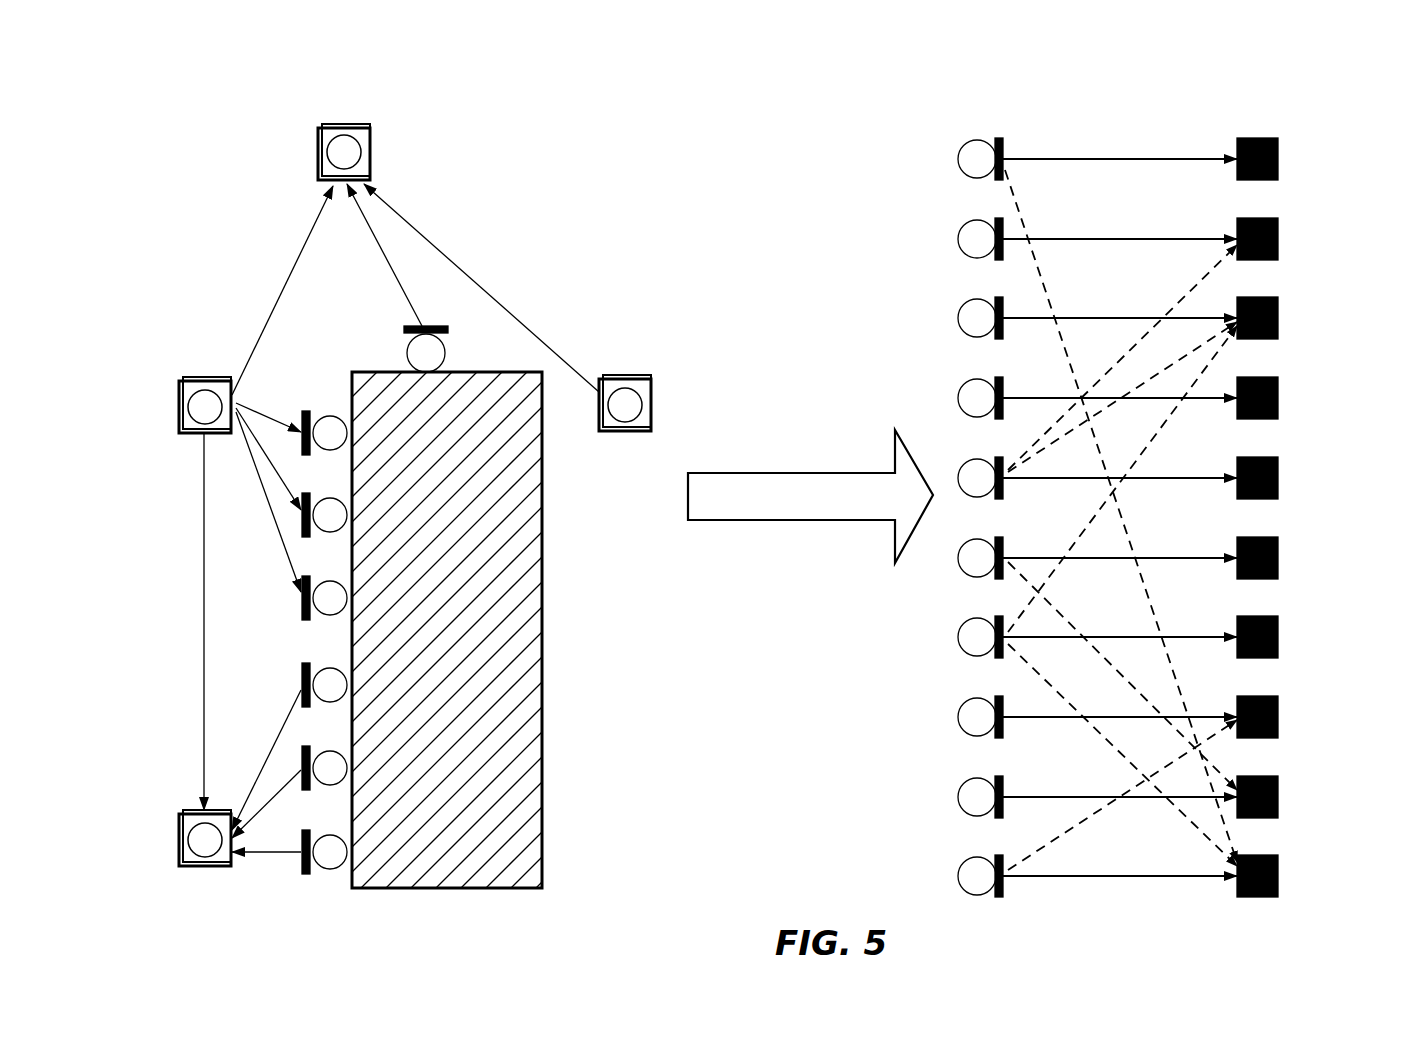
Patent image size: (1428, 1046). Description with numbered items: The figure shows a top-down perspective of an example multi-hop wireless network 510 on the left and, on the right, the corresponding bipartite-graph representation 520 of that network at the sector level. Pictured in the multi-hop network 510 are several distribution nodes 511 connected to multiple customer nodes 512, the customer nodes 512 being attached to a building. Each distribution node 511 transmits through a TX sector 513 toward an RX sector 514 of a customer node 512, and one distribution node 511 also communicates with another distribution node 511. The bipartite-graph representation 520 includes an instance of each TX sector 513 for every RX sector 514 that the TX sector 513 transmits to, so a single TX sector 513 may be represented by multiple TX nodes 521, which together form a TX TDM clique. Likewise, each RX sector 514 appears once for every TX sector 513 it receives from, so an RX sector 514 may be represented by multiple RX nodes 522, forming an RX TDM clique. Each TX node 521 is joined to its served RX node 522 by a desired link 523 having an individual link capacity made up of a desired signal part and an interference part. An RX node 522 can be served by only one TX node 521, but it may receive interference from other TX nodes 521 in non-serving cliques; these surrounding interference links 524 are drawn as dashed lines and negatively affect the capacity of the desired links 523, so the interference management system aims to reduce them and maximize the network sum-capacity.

The multi-hop network 510 is at (380, 64).
The distribution node 511 is at (338, 153).
The customer node 512 is at (328, 862).
The TX sector 513 is at (235, 395).
The RX sector 514 is at (308, 521).
The bipartite-graph representation 520 is at (1130, 84).
The TX node 521 is at (958, 165).
The RX node 522 is at (1280, 148).
The link 523 is at (1068, 157).
The interference link 524 is at (1063, 342).